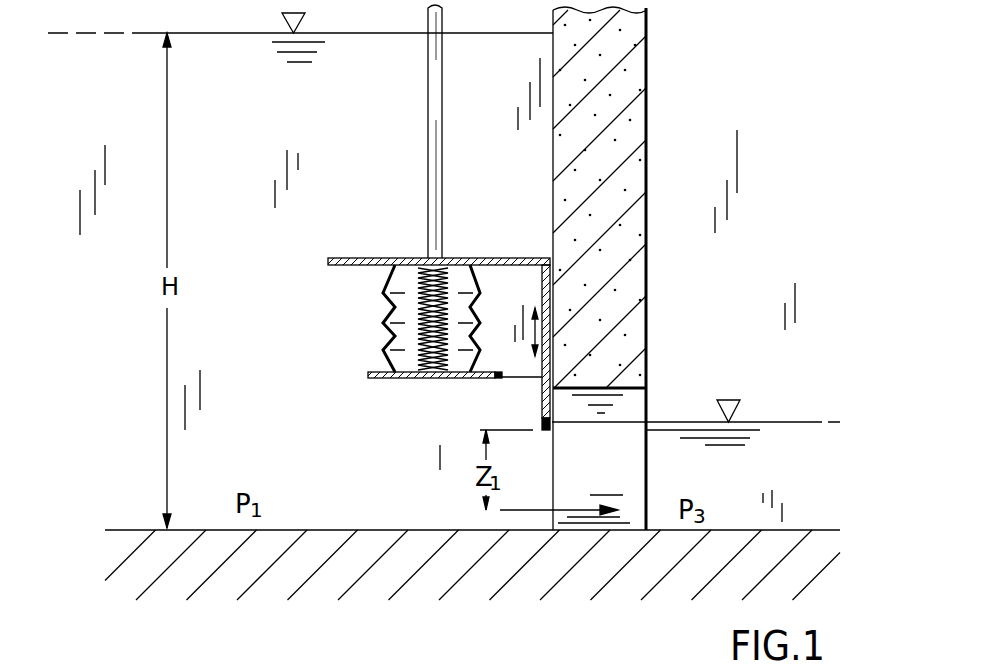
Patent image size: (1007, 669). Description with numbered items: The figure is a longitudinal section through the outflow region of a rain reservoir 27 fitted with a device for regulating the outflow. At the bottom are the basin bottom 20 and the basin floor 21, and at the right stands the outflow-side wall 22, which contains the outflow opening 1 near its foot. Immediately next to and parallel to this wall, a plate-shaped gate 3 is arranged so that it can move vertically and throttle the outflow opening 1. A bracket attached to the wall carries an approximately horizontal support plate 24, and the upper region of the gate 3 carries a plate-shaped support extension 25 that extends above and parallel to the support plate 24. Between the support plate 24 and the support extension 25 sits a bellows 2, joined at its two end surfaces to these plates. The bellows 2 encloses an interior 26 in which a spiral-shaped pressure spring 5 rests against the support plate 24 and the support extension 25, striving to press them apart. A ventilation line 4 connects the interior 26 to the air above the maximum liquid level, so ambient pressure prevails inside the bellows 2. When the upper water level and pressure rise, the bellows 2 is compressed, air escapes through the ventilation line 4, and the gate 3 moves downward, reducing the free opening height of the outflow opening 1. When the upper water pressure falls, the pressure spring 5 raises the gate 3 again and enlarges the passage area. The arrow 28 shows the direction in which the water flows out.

The outflow opening 1 is at (552, 457).
The bellows 2 is at (478, 345).
The gate 3 is at (541, 406).
The ventilation line 4 is at (436, 119).
The pressure spring 5 is at (452, 296).
The basin bottom 20 is at (141, 553).
The basin floor 21 is at (297, 529).
The outflow-side wall 22 is at (647, 153).
The support plate 24 is at (395, 379).
The support extension 25 is at (378, 266).
The interior 26 is at (380, 324).
The rain reservoir 27 is at (260, 177).
The arrow 28 is at (563, 509).